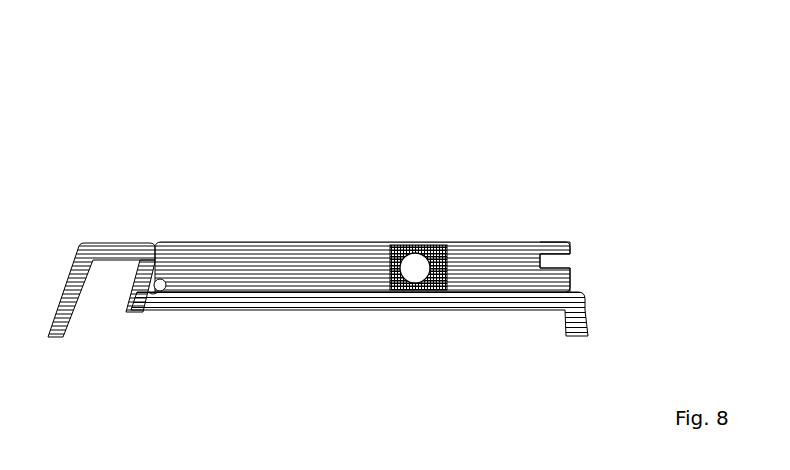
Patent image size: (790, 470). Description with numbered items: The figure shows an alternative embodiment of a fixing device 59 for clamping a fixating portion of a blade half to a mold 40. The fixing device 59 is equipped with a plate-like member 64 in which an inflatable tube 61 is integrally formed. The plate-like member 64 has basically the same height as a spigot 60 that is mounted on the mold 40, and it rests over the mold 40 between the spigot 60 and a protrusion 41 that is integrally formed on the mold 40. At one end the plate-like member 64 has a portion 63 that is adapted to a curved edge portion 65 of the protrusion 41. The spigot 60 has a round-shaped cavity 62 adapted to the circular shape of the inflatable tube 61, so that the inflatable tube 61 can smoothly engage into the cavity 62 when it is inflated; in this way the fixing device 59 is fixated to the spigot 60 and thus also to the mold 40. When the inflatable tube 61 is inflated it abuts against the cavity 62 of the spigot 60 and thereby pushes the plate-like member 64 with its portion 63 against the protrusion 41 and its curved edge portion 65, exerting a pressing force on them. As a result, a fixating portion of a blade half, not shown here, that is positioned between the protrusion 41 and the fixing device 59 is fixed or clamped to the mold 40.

The fixing device 59 is at (374, 114).
The protrusion 41 is at (97, 245).
The mold 40 is at (586, 302).
The plate-like member 64 is at (265, 243).
The spigot 60 is at (525, 245).
The inflatable tube 61 is at (402, 248).
The cavity 62 is at (439, 251).
The portion 63 is at (172, 269).
The curved edge portion 65 is at (153, 301).